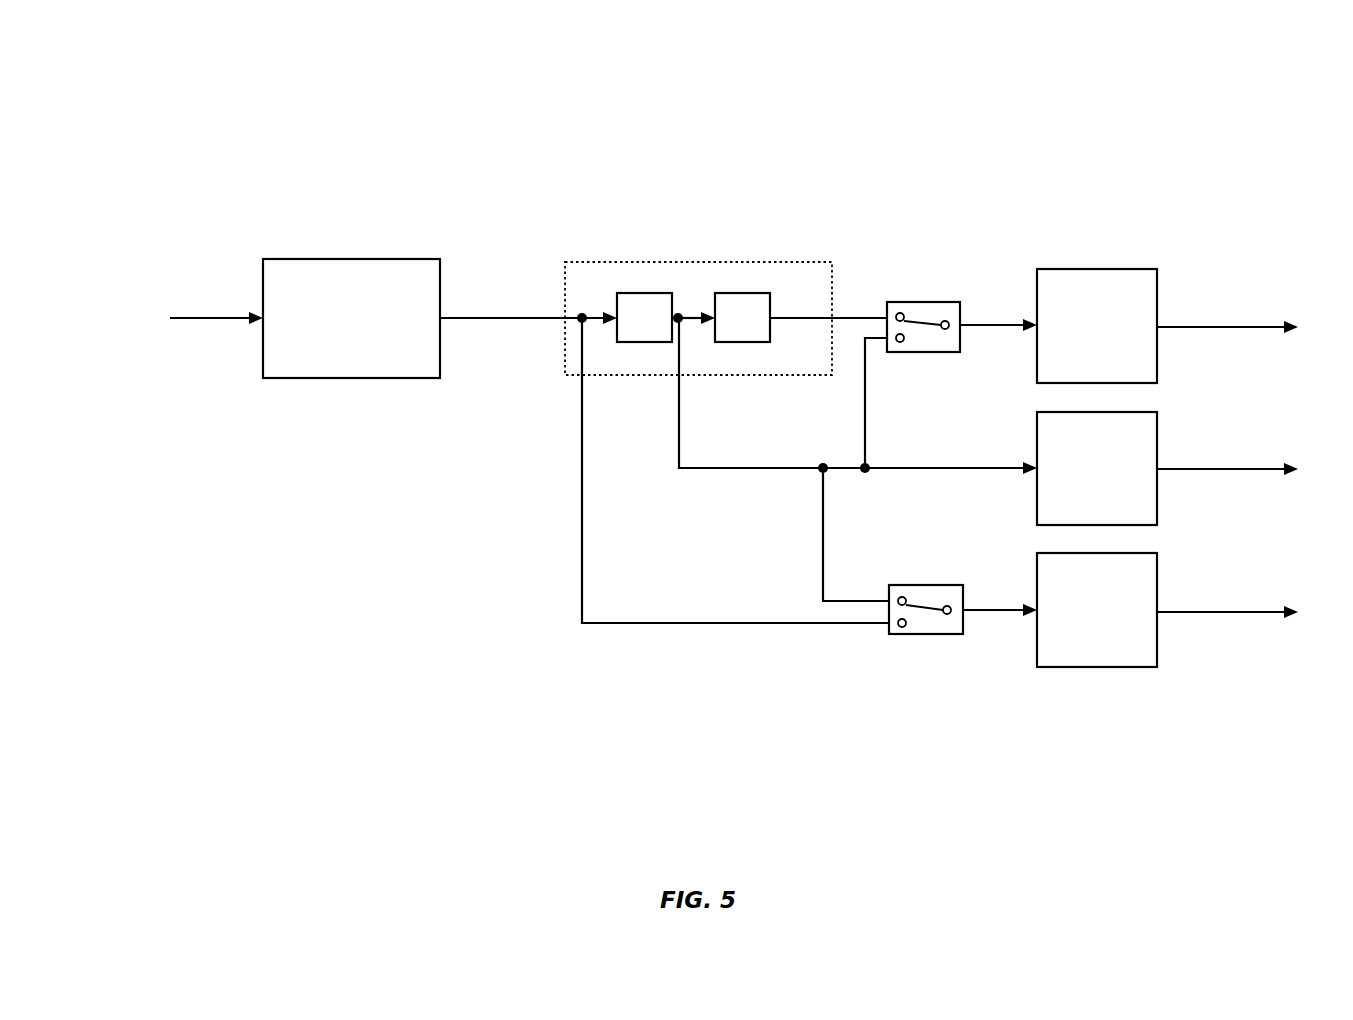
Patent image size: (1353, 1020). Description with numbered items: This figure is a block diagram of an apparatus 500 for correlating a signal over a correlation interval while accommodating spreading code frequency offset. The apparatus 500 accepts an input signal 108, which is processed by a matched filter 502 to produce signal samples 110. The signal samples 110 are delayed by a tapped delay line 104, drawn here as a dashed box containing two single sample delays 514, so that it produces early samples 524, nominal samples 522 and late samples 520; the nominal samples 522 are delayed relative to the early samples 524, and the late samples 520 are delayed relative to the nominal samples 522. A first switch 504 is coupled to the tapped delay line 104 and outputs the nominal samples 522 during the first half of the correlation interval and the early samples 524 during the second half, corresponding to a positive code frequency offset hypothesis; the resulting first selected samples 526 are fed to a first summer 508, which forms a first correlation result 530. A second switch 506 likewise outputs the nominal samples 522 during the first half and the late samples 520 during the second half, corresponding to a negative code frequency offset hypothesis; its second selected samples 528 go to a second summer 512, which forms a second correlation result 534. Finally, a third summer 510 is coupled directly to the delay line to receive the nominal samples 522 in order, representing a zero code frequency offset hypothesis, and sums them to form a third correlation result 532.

The apparatus 500 is at (262, 83).
The input signal 108 is at (222, 318).
The matched filter 502 is at (355, 259).
The signal samples 110 is at (487, 318).
The tapped delay line 104 is at (630, 262).
The single sample delay 514 is at (742, 293).
The early samples 524 is at (848, 317).
The first switch 504 is at (945, 302).
The first selected samples 526 is at (1008, 317).
The first summer 508 is at (1123, 269).
The first correlation result 530 is at (1228, 327).
The nominal samples 522 is at (762, 470).
The third summer 510 is at (1037, 448).
The third correlation result 532 is at (1228, 469).
The late samples 520 is at (582, 565).
The second switch 506 is at (908, 634).
The second selected samples 528 is at (997, 608).
The second summer 512 is at (1123, 667).
The second correlation result 534 is at (1232, 612).